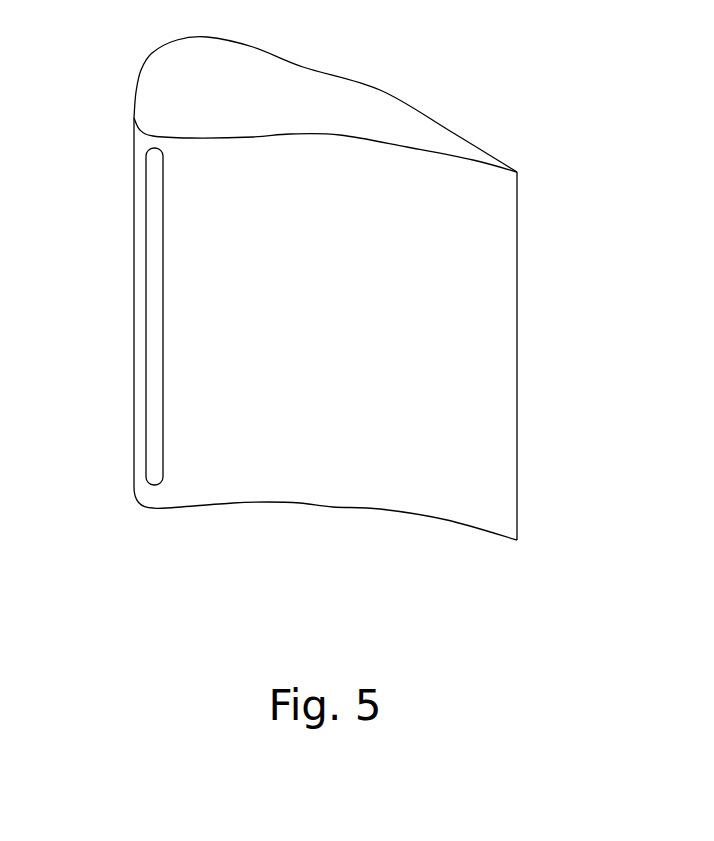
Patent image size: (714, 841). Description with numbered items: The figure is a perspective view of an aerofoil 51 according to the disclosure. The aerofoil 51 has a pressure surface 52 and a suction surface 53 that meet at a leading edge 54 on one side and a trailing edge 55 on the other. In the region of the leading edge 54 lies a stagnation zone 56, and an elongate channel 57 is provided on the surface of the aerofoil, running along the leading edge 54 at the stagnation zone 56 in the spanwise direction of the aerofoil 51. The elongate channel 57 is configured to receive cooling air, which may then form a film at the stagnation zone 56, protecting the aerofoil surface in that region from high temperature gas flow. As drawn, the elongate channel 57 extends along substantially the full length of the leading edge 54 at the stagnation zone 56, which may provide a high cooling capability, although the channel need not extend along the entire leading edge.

The aerofoil 51 is at (333, 315).
The pressure surface 52 is at (338, 526).
The suction surface 53 is at (380, 87).
The leading edge 54 is at (133, 188).
The trailing edge 55 is at (520, 326).
The stagnation zone 56 is at (157, 501).
The elongate channel 57 is at (156, 313).